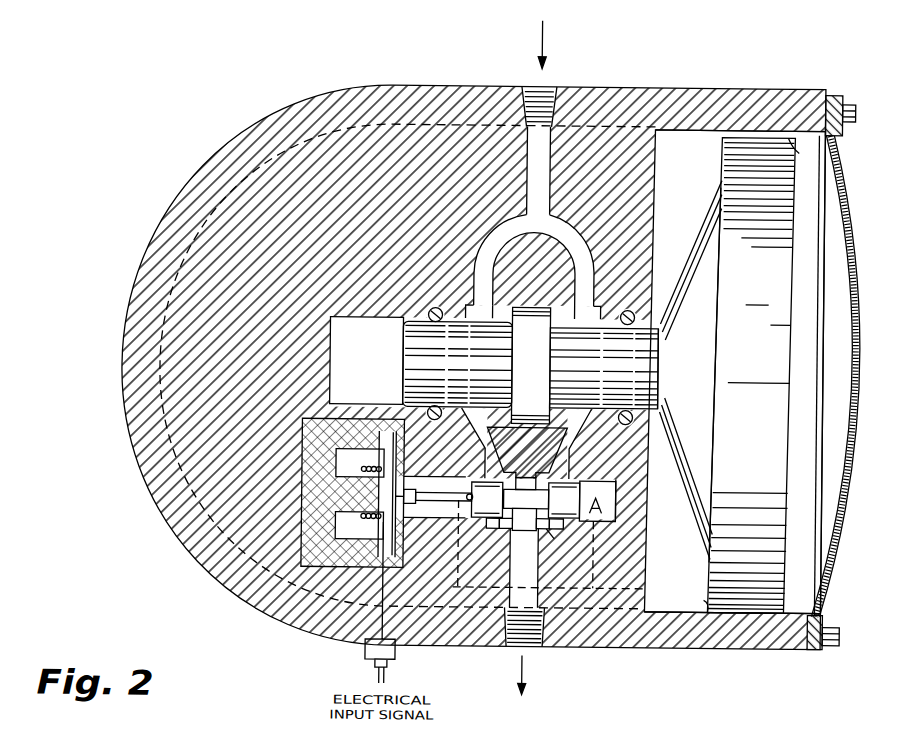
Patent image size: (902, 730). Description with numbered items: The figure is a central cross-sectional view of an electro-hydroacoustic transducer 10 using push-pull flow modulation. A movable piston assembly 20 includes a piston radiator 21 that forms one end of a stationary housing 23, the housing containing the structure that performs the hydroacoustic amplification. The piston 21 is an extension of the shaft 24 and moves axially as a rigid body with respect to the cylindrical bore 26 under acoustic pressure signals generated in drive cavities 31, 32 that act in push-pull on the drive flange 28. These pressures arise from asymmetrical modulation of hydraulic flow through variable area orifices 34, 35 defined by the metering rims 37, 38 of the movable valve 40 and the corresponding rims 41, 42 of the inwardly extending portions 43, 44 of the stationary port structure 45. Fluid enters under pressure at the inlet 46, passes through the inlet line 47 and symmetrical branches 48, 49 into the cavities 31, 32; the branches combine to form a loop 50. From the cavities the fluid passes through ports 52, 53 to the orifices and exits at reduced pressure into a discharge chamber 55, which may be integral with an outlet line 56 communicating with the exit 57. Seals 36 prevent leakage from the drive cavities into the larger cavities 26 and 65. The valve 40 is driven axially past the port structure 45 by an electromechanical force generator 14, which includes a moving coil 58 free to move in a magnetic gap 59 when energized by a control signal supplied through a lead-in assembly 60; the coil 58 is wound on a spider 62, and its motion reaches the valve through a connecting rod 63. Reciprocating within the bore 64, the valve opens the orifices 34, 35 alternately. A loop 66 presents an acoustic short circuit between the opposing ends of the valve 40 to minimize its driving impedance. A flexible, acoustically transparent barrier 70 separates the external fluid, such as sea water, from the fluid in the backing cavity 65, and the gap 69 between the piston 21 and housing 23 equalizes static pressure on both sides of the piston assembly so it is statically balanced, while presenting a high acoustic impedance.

The transducer 10 is at (718, 77).
The electromechanical force generator 14 is at (353, 492).
The movable piston assembly 20 is at (666, 316).
The piston radiator 21 is at (788, 269).
The stationary housing 23 is at (770, 91).
The shaft 24 is at (658, 338).
The cylindrical bore 26 is at (355, 368).
The drive flange 28 is at (522, 371).
The drive cavity 31 is at (568, 320).
The drive cavity 32 is at (476, 320).
The variable area orifice 34 is at (576, 481).
The variable area orifice 35 is at (500, 481).
The seals 36 is at (430, 308).
The metering rim 37 is at (525, 522).
The metering rim 38 is at (527, 459).
The movable valve 40 is at (526, 498).
The rim 41 is at (560, 528).
The rim 42 is at (494, 528).
The inwardly extending portion 43 is at (545, 528).
The inwardly extending portion 44 is at (509, 528).
The stationary port structure 45 is at (553, 541).
The inlet 46 is at (546, 87).
The inlet line 47 is at (528, 173).
The branch 48 is at (577, 233).
The branch 49 is at (489, 233).
The loop 50 is at (534, 269).
The port 52 is at (578, 444).
The port 53 is at (484, 444).
The discharge chamber 55 is at (523, 567).
The outlet line 56 is at (514, 600).
The exit 57 is at (536, 648).
The moving coil 58 is at (362, 519).
The magnetic gap 59 is at (362, 469).
The lead-in assembly 60 is at (390, 632).
The spider 62 is at (409, 486).
The connecting rod 63 is at (445, 501).
The bore 64 is at (590, 496).
The backing cavity 65 is at (676, 175).
The loop 66 is at (610, 648).
The gap 69 is at (792, 137).
The barrier 70 is at (857, 220).